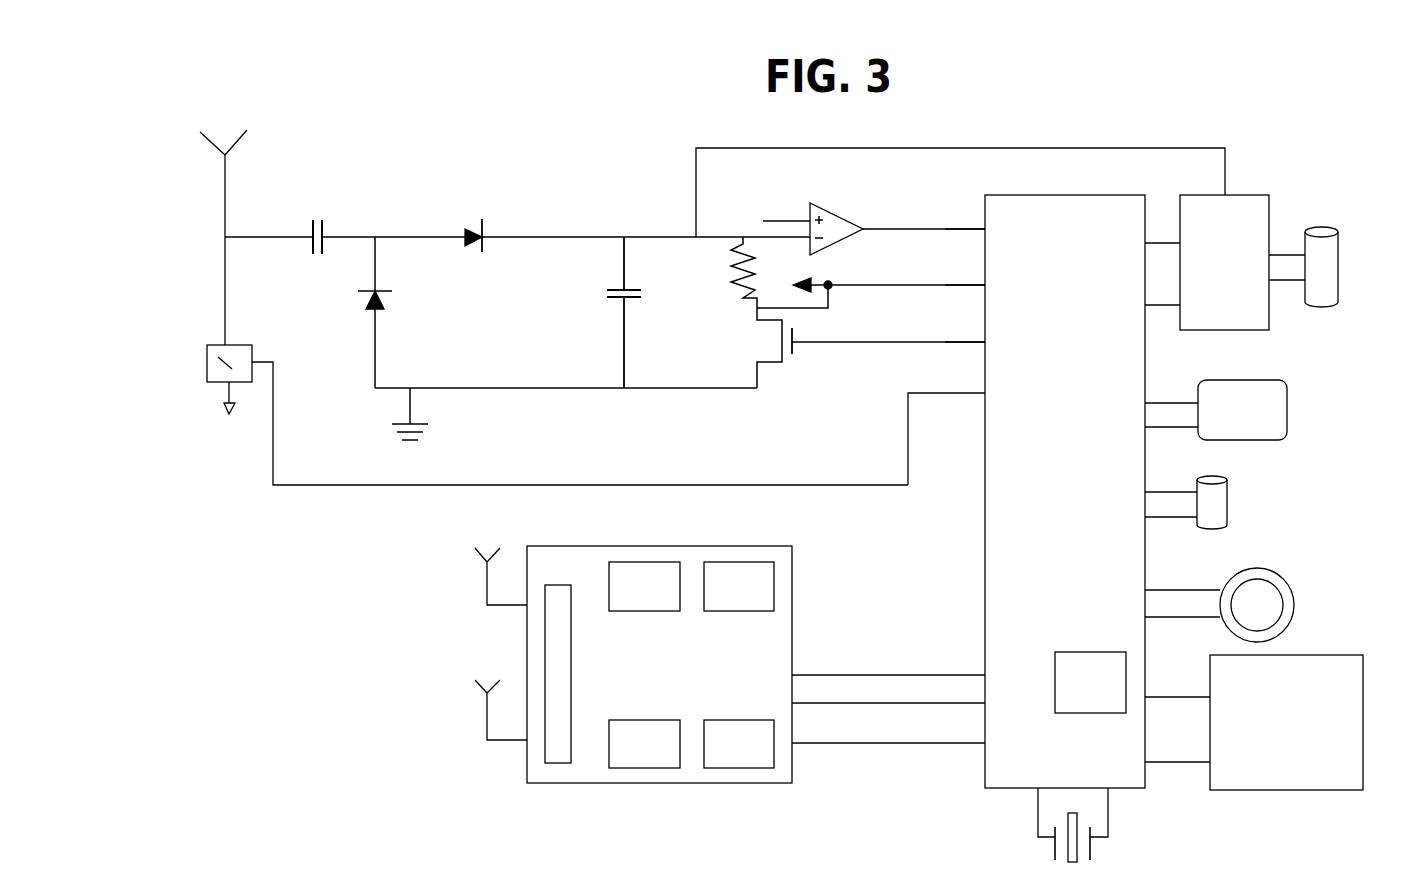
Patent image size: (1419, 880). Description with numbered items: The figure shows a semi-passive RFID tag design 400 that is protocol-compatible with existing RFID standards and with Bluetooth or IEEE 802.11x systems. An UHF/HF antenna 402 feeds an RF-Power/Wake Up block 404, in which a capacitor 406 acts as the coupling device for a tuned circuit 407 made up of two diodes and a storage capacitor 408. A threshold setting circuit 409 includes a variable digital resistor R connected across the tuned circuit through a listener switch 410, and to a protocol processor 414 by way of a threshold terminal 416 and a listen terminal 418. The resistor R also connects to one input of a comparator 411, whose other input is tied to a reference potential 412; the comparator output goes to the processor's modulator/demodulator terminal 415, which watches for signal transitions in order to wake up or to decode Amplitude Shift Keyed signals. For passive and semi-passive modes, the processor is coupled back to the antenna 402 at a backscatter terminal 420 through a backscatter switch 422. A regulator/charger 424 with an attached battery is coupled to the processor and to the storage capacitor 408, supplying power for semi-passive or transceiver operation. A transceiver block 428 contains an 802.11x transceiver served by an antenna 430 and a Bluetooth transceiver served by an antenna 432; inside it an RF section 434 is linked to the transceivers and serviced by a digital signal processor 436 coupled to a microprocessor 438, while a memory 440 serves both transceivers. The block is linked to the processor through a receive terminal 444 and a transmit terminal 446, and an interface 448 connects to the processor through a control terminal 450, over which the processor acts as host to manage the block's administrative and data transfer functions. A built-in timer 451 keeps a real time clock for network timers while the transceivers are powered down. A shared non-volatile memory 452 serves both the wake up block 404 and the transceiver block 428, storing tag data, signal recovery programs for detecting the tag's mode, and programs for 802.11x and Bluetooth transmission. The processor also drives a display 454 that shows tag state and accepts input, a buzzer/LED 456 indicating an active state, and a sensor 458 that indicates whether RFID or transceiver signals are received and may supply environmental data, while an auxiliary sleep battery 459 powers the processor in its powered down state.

The semi-passive RFID tag design 400 is at (1108, 128).
The UHF/HF antenna 402 is at (209, 139).
The RF-Power/Wake Up block 404 is at (577, 440).
The capacitor 406 is at (322, 248).
The tuned circuit 407 is at (557, 322).
The storage capacitor 408 is at (630, 300).
The threshold setting circuit 409 is at (849, 312).
The listener switch 410 is at (793, 334).
The comparator 411 is at (832, 210).
The reference potential 412 is at (772, 220).
The protocol processor 414 is at (1030, 195).
The modulator/demodulator terminal 415 is at (975, 228).
The threshold terminal 416 is at (975, 284).
The listen terminal 418 is at (977, 341).
The backscatter terminal 420 is at (977, 392).
The backscatter switch 422 is at (233, 346).
The regulator/charger 424 is at (1269, 220).
The transceiver block 428 is at (1338, 258).
The antenna 430 is at (485, 562).
The antenna 432 is at (485, 693).
The RF section 434 is at (571, 675).
The digital signal processor 436 is at (609, 570).
The microprocessor 438 is at (774, 575).
The memory 440 is at (640, 768).
The receive terminal 444 is at (872, 674).
The transmit terminal 446 is at (865, 702).
The interface 448 is at (736, 768).
The control terminal 450 is at (855, 742).
The timer 451 is at (1083, 650).
The non-volatile memory 452 is at (1363, 712).
The display 454 is at (1287, 400).
The buzzer/LED 456 is at (1227, 487).
The sensor 458 is at (1283, 576).
The auxiliary sleep battery 459 is at (1092, 847).